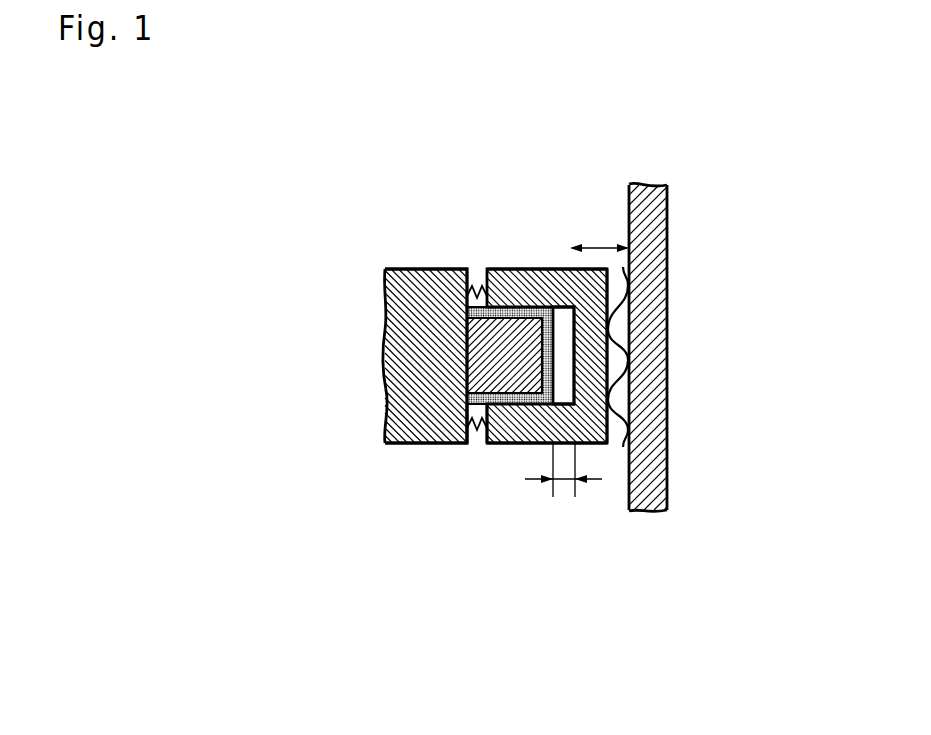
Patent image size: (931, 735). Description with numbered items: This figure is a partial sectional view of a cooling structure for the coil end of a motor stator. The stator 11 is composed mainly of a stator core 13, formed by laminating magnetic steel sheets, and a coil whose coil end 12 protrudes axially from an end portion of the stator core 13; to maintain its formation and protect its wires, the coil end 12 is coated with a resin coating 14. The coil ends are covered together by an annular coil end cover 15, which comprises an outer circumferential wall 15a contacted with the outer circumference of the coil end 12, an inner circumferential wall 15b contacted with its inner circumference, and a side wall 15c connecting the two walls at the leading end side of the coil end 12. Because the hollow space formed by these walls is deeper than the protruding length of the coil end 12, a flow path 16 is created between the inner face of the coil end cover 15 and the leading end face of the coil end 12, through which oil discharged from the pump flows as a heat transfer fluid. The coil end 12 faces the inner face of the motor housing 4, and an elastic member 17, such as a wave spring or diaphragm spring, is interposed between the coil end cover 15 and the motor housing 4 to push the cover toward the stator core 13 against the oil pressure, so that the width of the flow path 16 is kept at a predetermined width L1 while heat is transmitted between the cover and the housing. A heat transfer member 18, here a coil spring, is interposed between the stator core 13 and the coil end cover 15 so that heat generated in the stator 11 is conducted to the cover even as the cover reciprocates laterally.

The stator 11 is at (388, 256).
The stator core 13 is at (435, 268).
The coil end 12 is at (494, 362).
The resin coating 14 is at (477, 289).
The coil end cover 15 is at (500, 474).
The outer circumferential wall 15a is at (527, 268).
The inner circumferential wall 15b is at (517, 443).
The side wall 15c is at (592, 323).
The flow path 16 is at (564, 317).
The elastic member 17 is at (622, 428).
The heat transfer member 18 is at (472, 445).
The motor housing 4 is at (652, 330).
The predetermined width L1 is at (563, 489).